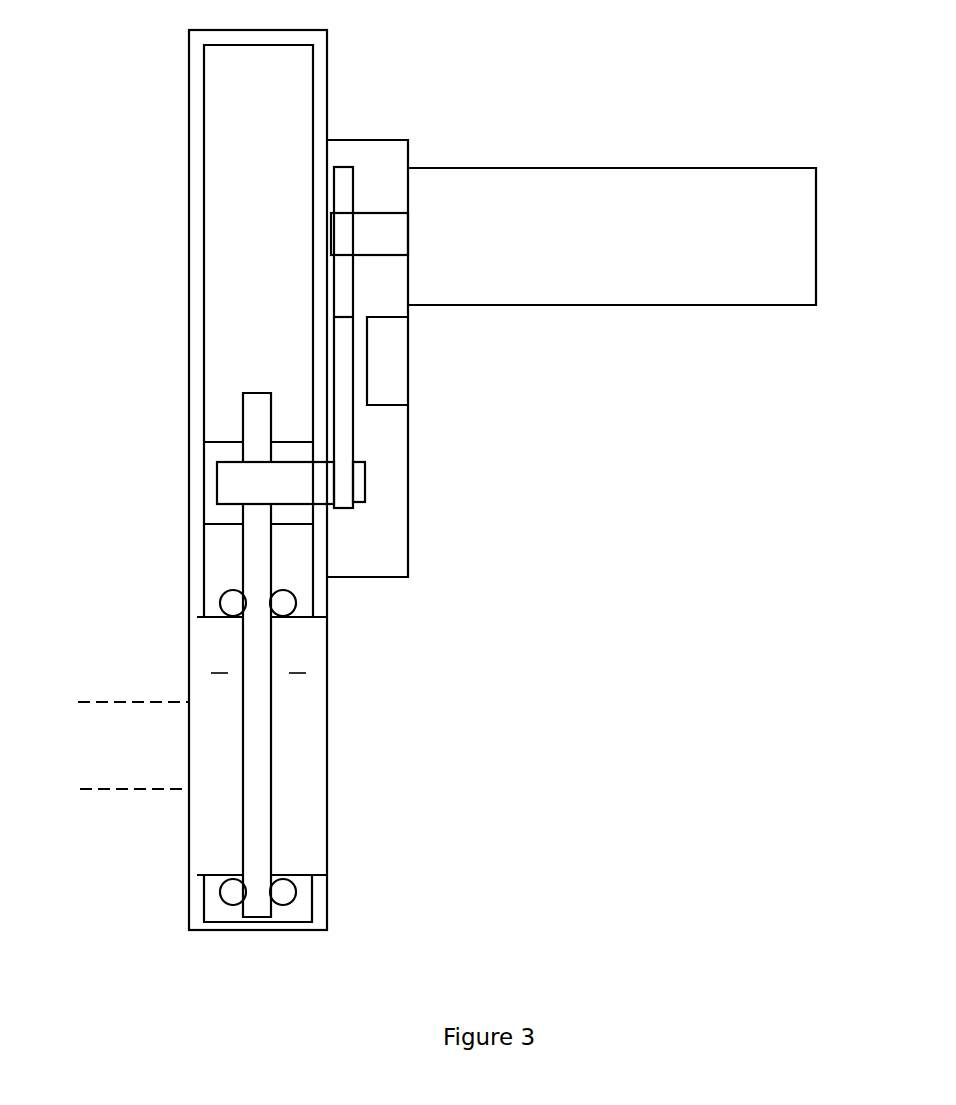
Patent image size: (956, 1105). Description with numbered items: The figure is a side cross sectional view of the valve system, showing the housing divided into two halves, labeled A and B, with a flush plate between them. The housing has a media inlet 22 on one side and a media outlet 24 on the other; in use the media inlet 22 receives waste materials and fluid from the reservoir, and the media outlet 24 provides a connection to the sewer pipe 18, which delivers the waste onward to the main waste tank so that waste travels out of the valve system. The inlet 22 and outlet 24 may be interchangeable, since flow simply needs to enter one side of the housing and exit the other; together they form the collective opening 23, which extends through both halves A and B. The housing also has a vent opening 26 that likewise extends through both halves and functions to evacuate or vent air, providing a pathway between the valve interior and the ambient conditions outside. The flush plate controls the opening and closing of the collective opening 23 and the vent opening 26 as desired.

The sewer pipe 18 is at (142, 790).
The media inlet 22 is at (306, 732).
The collective opening 23 is at (333, 946).
The media outlet 24 is at (216, 755).
The vent opening 26 is at (217, 560).